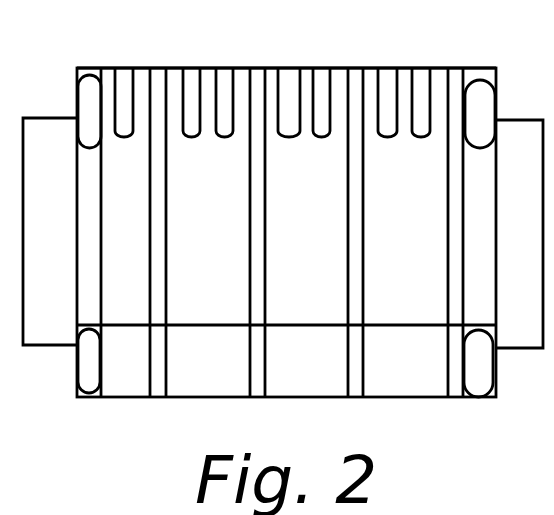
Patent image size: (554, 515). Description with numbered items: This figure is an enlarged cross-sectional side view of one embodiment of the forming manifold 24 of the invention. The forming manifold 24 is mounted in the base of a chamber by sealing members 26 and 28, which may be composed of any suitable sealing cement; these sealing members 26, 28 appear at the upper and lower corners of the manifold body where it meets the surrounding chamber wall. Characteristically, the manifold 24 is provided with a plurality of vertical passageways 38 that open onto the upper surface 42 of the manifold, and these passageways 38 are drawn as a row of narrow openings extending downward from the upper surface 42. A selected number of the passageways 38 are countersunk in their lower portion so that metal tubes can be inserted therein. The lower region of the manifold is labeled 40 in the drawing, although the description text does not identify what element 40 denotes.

The forming manifold 24 is at (283, 232).
The sealing member 26 is at (87, 100).
The sealing member 28 is at (84, 366).
The vertical passageways 38 is at (225, 77).
The bottom section 40 is at (308, 398).
The upper surface 42 is at (273, 68).